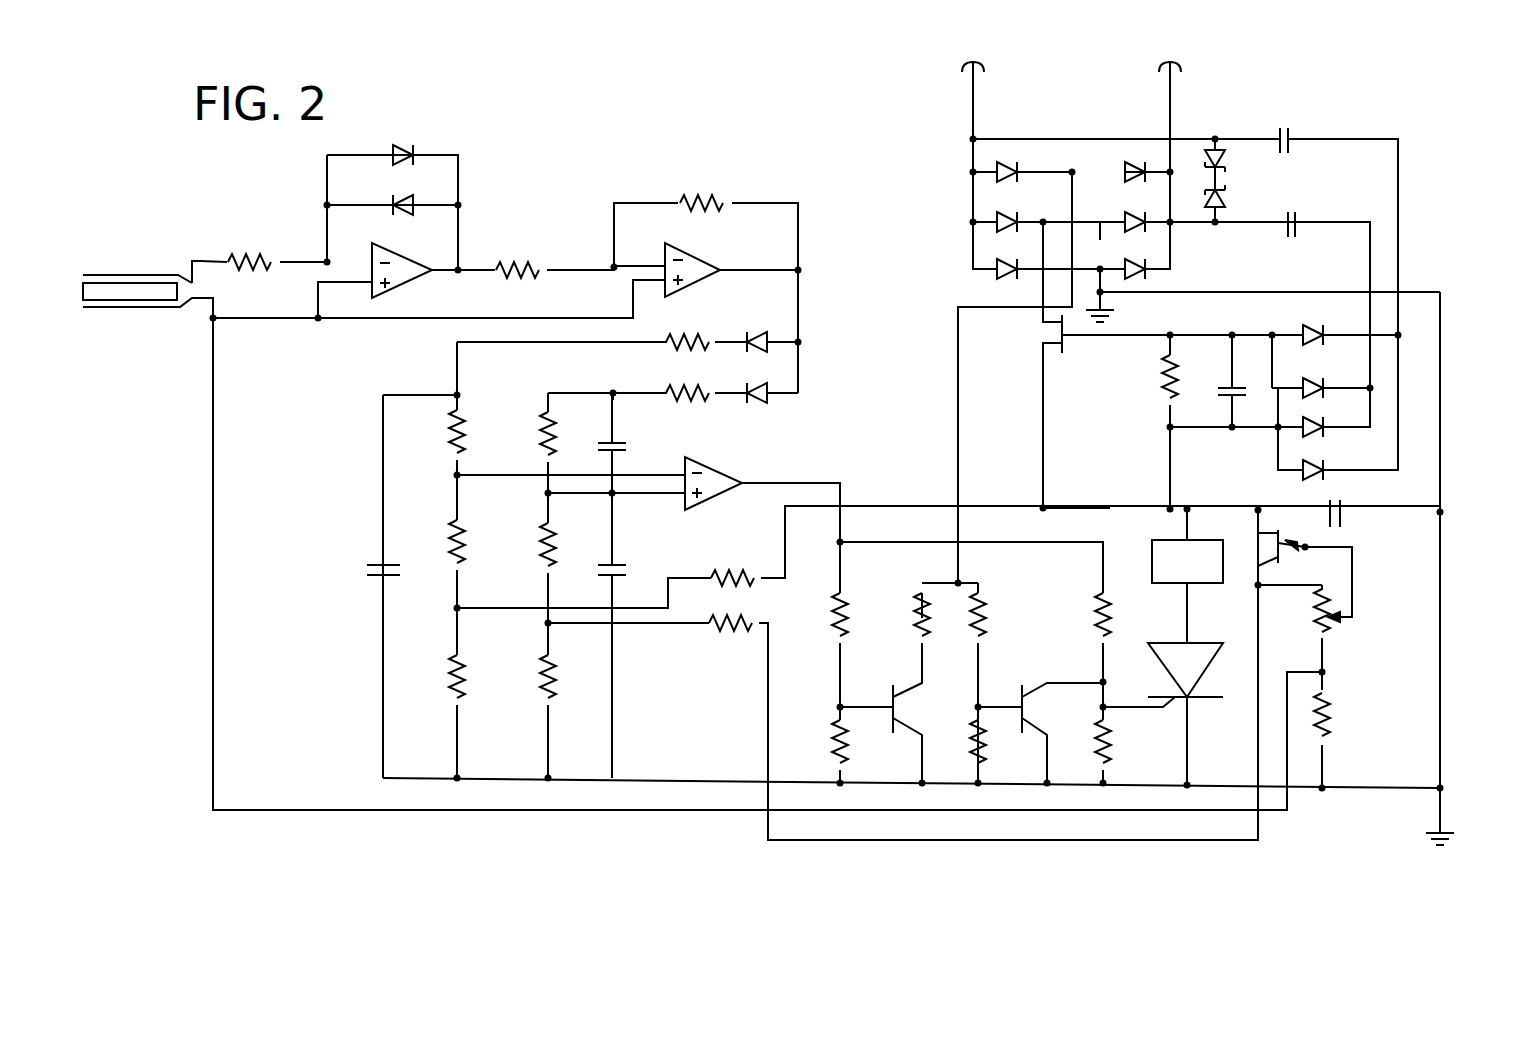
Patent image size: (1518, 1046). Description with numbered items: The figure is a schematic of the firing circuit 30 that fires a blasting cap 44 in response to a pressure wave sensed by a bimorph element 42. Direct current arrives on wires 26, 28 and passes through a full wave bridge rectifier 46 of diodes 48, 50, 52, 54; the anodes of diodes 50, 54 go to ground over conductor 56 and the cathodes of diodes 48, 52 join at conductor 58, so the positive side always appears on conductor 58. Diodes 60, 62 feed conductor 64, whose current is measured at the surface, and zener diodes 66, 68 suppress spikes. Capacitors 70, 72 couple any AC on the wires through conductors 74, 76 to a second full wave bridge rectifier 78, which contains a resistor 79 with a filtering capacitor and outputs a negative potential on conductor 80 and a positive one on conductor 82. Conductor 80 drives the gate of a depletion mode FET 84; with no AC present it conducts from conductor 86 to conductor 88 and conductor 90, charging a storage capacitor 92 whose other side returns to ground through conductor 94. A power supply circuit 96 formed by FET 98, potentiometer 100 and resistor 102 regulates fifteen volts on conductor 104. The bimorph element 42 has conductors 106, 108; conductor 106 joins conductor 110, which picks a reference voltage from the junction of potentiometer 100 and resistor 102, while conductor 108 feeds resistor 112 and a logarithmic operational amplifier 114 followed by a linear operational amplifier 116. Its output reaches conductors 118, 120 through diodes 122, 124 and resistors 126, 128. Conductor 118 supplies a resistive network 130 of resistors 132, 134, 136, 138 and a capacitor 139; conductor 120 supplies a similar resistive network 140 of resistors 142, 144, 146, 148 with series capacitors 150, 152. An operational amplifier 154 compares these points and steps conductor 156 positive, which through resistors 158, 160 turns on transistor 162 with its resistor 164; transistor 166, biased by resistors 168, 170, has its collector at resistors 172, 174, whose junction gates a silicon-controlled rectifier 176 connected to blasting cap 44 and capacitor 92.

The wire 26 is at (972, 115).
The wire 28 is at (1175, 115).
The firing circuit 30 is at (660, 175).
The bimorph element 42 is at (120, 288).
The blasting cap 44 is at (1117, 535).
The full wave bridge rectifier 46 is at (862, 186).
The diode 48 is at (997, 212).
The diode 50 is at (997, 262).
The diode 52 is at (1148, 226).
The diode 54 is at (1148, 272).
The conductor 56 is at (1082, 268).
The conductor 58 is at (1100, 221).
The diode 60 is at (1012, 164).
The diode 62 is at (1115, 165).
The conductor 64 is at (1050, 165).
The zener diode 66 is at (1230, 160).
The zener diode 68 is at (1230, 205).
The capacitor 70 is at (1292, 136).
The capacitor 72 is at (1300, 223).
The conductor 74 is at (1355, 140).
The conductor 76 is at (1345, 225).
The full wave bridge rectifier 78 is at (1420, 375).
The resistor 79 is at (1160, 389).
The conductor 80 is at (1145, 326).
The conductor 82 is at (1190, 433).
The depletion mode field effect transistor 84 is at (1062, 341).
The conductor 86 is at (1040, 292).
The conductor 88 is at (1043, 419).
The conductor 90 is at (1078, 508).
The storage capacitor 92 is at (1348, 506).
The conductor 94 is at (1440, 596).
The power supply circuit 96 is at (1425, 652).
The FET 98 is at (1352, 575).
The potentiometer 100 is at (1335, 632).
The resistor 102 is at (1335, 726).
The conductor 104 is at (1180, 841).
The conductor 106 is at (197, 302).
The conductor 108 is at (200, 262).
The conductor 110 is at (212, 553).
The resistor 112 is at (255, 262).
The operational amplifier 114 is at (400, 250).
The linear operational amplifier 116 is at (700, 256).
The conductor 118 is at (450, 372).
The conductor 120 is at (625, 398).
The diode 122 is at (768, 330).
The diode 124 is at (775, 401).
The resistor 126 is at (690, 335).
The resistor 128 is at (700, 385).
The resistive network 130 is at (345, 514).
The resistor 132 is at (450, 428).
The resistor 134 is at (450, 546).
The resistor 136 is at (450, 665).
The resistor 138 is at (740, 568).
The capacitor 139 is at (370, 573).
The resistive network 140 is at (520, 526).
The resistor 142 is at (540, 440).
The resistor 144 is at (540, 543).
The resistor 146 is at (540, 665).
The resistor 148 is at (735, 636).
The capacitor 150 is at (628, 446).
The capacitor 152 is at (630, 571).
The operational amplifier 154 is at (735, 476).
The conductor 156 is at (845, 481).
The resistor 158 is at (832, 611).
The resistor 160 is at (832, 746).
The transistor 162 is at (890, 701).
The resistor 164 is at (957, 386).
The transistor 166 is at (1018, 701).
The resistor 168 is at (985, 621).
The resistor 170 is at (965, 756).
The resistor 172 is at (1095, 621).
The resistor 174 is at (1100, 761).
The silicon-controlled rectifier 176 is at (1170, 661).